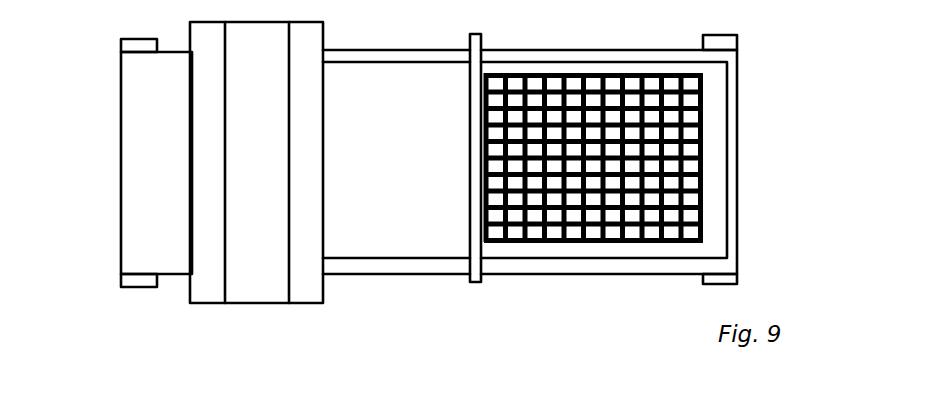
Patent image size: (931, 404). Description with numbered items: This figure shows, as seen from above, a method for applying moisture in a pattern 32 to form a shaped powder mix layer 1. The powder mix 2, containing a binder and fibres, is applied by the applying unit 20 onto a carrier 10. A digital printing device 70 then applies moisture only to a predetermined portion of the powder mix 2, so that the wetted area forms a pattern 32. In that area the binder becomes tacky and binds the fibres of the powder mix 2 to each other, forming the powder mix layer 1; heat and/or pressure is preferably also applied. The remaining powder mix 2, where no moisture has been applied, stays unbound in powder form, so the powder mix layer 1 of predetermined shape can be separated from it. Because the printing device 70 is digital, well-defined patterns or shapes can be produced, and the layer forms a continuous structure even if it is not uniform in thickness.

The powder mix layer 1 is at (710, 128).
The powder mix 2 is at (373, 213).
The carrier 10 is at (158, 233).
The applying unit 20 is at (255, 282).
The pattern 32 is at (587, 190).
The printing device 70 is at (477, 258).